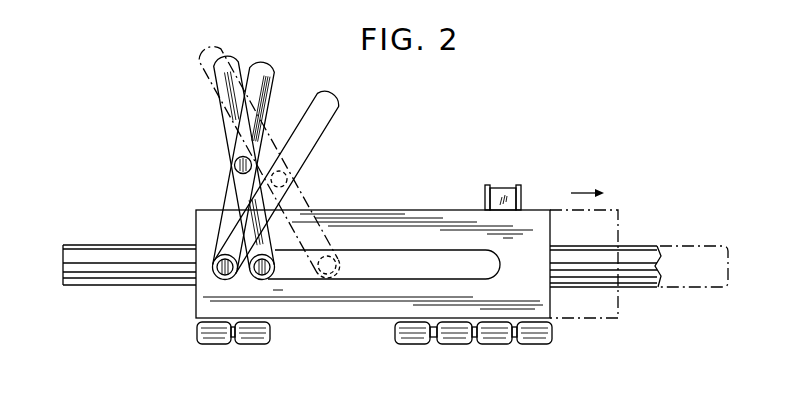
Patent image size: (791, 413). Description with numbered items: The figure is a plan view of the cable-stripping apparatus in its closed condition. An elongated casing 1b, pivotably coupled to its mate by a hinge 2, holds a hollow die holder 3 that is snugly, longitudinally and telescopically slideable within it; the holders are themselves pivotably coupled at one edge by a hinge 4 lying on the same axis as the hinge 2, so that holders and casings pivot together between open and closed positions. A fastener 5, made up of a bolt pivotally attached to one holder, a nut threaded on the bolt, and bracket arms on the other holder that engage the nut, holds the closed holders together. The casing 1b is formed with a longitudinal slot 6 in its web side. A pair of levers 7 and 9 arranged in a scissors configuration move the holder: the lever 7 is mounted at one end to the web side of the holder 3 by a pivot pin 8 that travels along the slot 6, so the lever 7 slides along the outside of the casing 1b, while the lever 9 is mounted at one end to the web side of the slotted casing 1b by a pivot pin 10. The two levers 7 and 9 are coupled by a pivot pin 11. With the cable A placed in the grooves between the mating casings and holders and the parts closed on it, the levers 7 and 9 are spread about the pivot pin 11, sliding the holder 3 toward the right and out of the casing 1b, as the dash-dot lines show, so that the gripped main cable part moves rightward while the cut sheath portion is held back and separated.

The casing 1b is at (357, 319).
The hinge 2 is at (214, 345).
The die holder 3 is at (118, 230).
The hinge 4 is at (455, 345).
The fastener 5 is at (506, 183).
The longitudinal slot 6 is at (386, 262).
The lever 7 is at (230, 88).
The pivot pin 8 is at (276, 250).
The lever 9 is at (275, 80).
The pivot pin 10 is at (216, 276).
The pivot pin 11 is at (236, 162).
The cable A is at (615, 207).